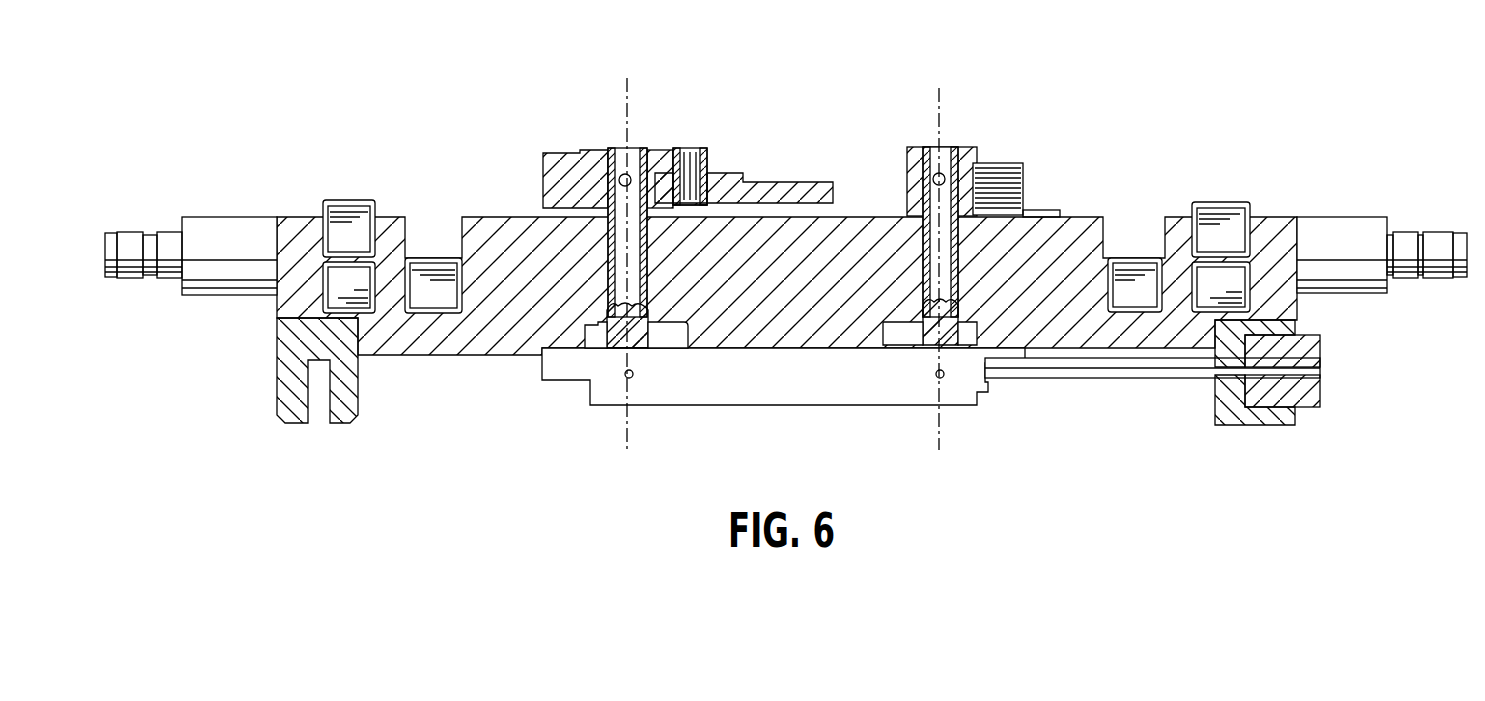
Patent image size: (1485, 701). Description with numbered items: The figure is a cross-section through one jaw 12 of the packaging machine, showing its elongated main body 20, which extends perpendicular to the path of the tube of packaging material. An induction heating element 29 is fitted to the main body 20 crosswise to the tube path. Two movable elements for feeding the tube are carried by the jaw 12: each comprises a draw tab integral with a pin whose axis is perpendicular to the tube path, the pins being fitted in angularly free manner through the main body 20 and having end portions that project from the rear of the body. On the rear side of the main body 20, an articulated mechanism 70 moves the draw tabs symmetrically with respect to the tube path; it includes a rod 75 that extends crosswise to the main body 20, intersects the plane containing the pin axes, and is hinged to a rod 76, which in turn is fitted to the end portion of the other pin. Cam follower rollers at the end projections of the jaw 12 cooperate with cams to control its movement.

The jaw 12 is at (786, 234).
The main body 20 is at (452, 343).
The induction heating element 29 is at (773, 390).
The articulated mechanism 70 is at (752, 128).
The rod 75 is at (808, 183).
The rod 76 is at (967, 153).